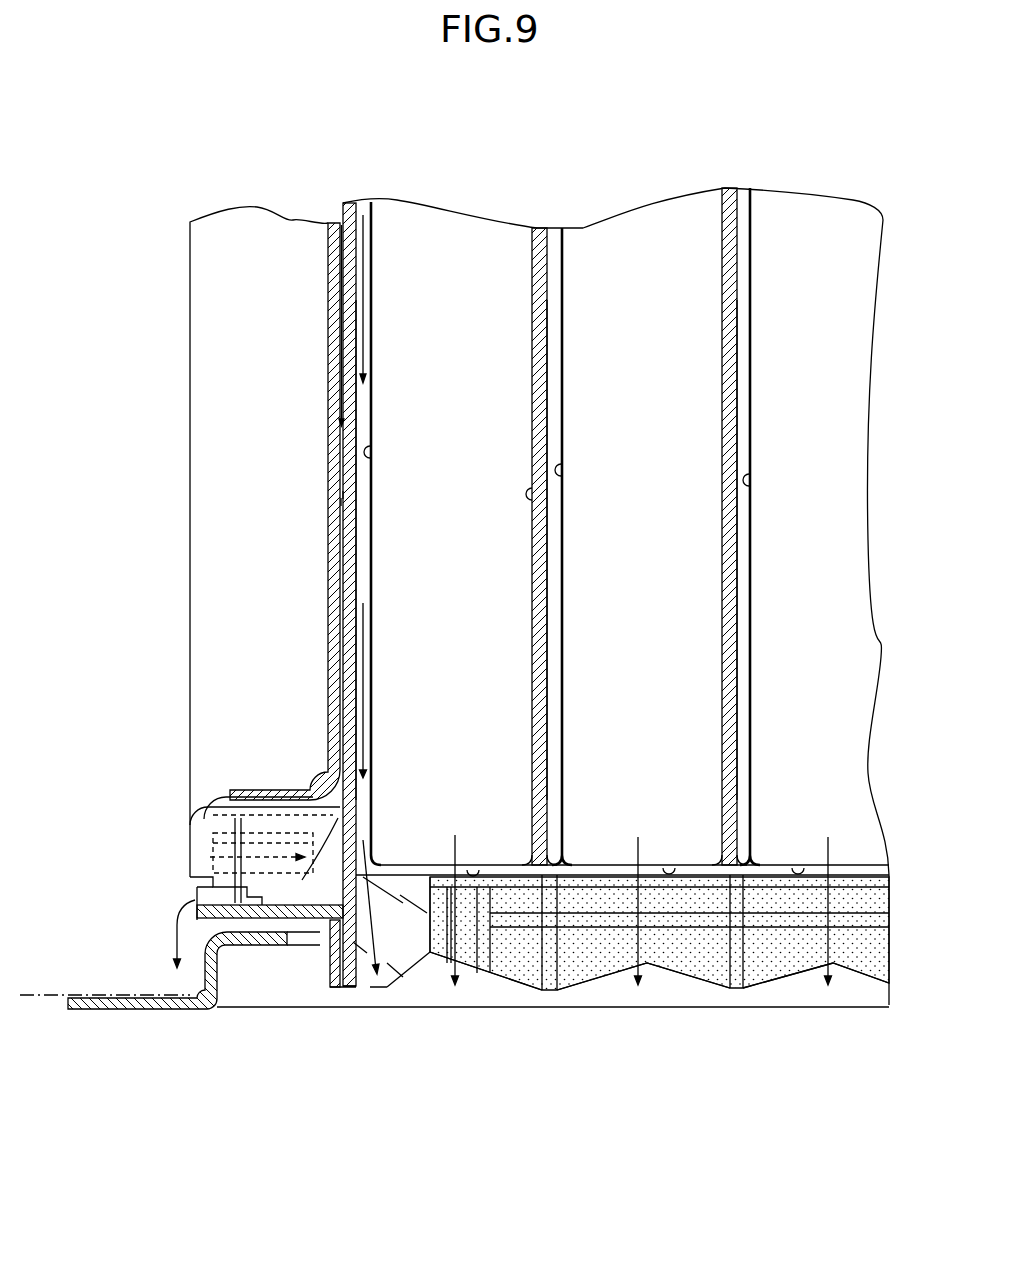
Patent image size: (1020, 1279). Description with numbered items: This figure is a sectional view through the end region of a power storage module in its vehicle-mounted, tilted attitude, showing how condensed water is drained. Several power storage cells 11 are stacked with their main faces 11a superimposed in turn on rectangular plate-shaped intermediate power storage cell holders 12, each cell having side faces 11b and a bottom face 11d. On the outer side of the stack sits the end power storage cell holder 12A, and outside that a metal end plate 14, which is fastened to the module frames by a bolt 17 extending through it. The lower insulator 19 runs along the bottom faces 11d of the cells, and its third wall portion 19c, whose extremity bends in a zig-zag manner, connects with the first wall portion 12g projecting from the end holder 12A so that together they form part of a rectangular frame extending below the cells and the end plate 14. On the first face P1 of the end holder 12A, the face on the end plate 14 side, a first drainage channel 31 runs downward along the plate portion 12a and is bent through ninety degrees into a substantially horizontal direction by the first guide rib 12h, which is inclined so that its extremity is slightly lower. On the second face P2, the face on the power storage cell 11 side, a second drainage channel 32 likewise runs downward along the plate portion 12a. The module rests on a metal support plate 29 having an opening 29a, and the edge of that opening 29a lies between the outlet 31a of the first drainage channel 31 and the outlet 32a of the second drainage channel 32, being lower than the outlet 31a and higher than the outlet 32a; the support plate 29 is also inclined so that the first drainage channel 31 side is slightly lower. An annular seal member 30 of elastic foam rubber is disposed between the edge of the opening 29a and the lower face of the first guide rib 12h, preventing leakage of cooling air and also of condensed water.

The power storage cell 11 is at (453, 218).
The main face 11a is at (374, 450).
The side face 11b is at (470, 346).
The bottom face 11d is at (476, 869).
The intermediate power storage cell holder 12 is at (553, 410).
The end power storage cell holder 12A is at (415, 594).
The plate portion 12a is at (354, 523).
The first wall portion 12g is at (347, 990).
The first guide rib 12h is at (290, 870).
The end plate 14 is at (220, 405).
The bolt 17 is at (212, 800).
The lower insulator 19 is at (684, 986).
The third wall portion 19c is at (587, 972).
The support plate 29 is at (138, 1012).
The opening 29a is at (293, 927).
The seal member 30 is at (252, 925).
The first drainage channel 31 is at (338, 573).
The outlet of the first drainage channel 31a is at (205, 888).
The second drainage channel 32 is at (362, 578).
The outlet of the second drainage channel 32a is at (362, 990).
The first face P1 is at (342, 502).
The second face P2 is at (346, 495).